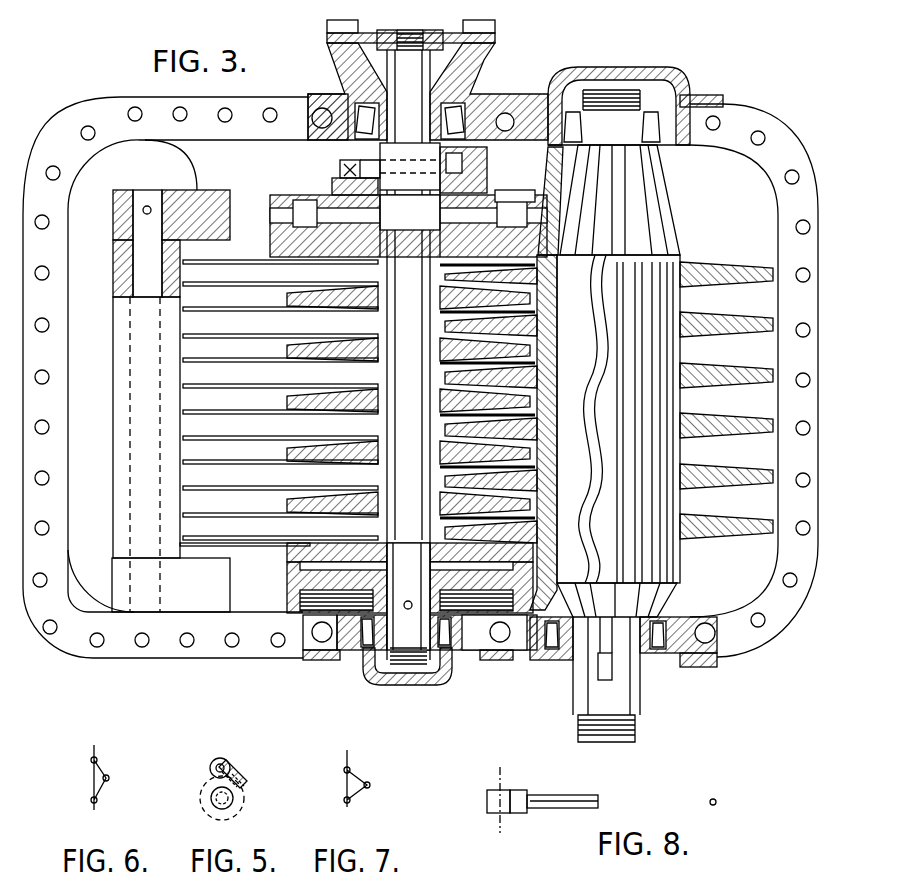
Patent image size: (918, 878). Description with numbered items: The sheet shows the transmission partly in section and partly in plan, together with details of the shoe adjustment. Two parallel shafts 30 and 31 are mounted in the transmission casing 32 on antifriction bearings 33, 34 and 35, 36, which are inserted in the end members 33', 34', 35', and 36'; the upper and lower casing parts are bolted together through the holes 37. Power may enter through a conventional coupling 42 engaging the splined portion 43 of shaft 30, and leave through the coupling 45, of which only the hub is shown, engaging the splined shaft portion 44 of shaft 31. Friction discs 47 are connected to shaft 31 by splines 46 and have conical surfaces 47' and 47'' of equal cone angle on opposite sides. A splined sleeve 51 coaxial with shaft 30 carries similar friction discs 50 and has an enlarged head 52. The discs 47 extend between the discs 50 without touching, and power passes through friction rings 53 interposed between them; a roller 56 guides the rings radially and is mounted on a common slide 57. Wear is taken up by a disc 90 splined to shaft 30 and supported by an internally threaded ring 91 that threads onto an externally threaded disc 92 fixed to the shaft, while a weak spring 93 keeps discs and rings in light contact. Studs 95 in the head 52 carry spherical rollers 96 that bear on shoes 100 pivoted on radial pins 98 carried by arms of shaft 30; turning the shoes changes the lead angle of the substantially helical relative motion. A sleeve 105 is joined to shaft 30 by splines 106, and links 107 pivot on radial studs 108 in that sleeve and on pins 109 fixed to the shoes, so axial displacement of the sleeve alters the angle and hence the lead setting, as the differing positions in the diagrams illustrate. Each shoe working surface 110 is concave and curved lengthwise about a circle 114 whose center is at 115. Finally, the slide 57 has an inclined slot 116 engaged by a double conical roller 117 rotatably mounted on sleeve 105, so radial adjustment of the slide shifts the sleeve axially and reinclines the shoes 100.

In FIG. 3, the drive shaft 30 is at (405, 630).
In FIG. 3, the driven shaft 31 is at (650, 200).
In FIG. 3, the transmission casing 32 is at (246, 648).
In FIG. 3, the antifriction bearing 33 is at (347, 96).
In FIG. 3, the end member 33' is at (313, 106).
In FIG. 3, the antifriction bearing 34 is at (482, 659).
In FIG. 3, the end member 34' is at (344, 655).
In FIG. 3, the antifriction bearing 35 is at (639, 104).
In FIG. 3, the end member 35' is at (519, 97).
In FIG. 3, the antifriction bearing 36 is at (678, 661).
In FIG. 3, the end member 36' is at (715, 674).
In FIG. 3, the holes 37 is at (97, 648).
In FIG. 3, the coupling 42 is at (370, 72).
In FIG. 3, the splined portion 43 is at (417, 72).
In FIG. 3, the splined shaft portion 44 is at (577, 712).
In FIG. 3, the coupling 45 is at (560, 683).
In FIG. 3, the splines 46 is at (643, 448).
In FIG. 3, the friction discs 47 is at (726, 375).
In FIG. 3, the conical surface 47' is at (726, 515).
In FIG. 3, the conical surface 47'' is at (752, 553).
In FIG. 3, the friction discs 50 is at (310, 450).
In FIG. 3, the splined sleeve 51 is at (377, 274).
In FIG. 3, the enlarged head 52 is at (290, 248).
In FIG. 3, the friction rings 53 is at (182, 481).
In FIG. 3, the roller 56 is at (125, 465).
In FIG. 3, the slide 57 is at (215, 585).
In FIG. 3, the disc 90 is at (290, 555).
In FIG. 3, the internally threaded ring 91 is at (290, 578).
In FIG. 3, the externally threaded disc 92 is at (323, 585).
In FIG. 3, the weak spring 93 is at (455, 563).
In FIG. 3, the studs 95 is at (297, 210).
In FIG. 3, the spherical rollers 96 is at (292, 205).
In FIG. 3, the pins 98 is at (333, 188).
In FIG. 6, the pins 98 is at (94, 802).
In FIG. 5, the pins 98 is at (218, 808).
In FIG. 7, the pins 98 is at (347, 803).
In FIG. 8, the pins 98 is at (557, 795).
In FIG. 3, the shoes 100 is at (507, 200).
In FIG. 5, the shoes 100 is at (242, 790).
In FIG. 8, the shoes 100 is at (516, 792).
In FIG. 3, the sleeve 105 is at (466, 180).
In FIG. 3, the splines 106 is at (393, 147).
In FIG. 3, the links 107 is at (357, 161).
In FIG. 5, the links 107 is at (230, 766).
In FIG. 3, the radial stud 108 is at (342, 178).
In FIG. 6, the radial stud 108 is at (96, 760).
In FIG. 5, the radial stud 108 is at (222, 758).
In FIG. 7, the radial stud 108 is at (345, 770).
In FIG. 6, the pins 109 is at (108, 777).
In FIG. 5, the pins 109 is at (247, 778).
In FIG. 7, the pins 109 is at (370, 783).
In FIG. 8, the working surface 110 is at (492, 810).
In FIG. 8, the circle 114 is at (500, 768).
In FIG. 8, the center 115 is at (715, 799).
In FIG. 3, the inclined slot 116 is at (528, 150).
In FIG. 3, the double conical roller 117 is at (455, 162).